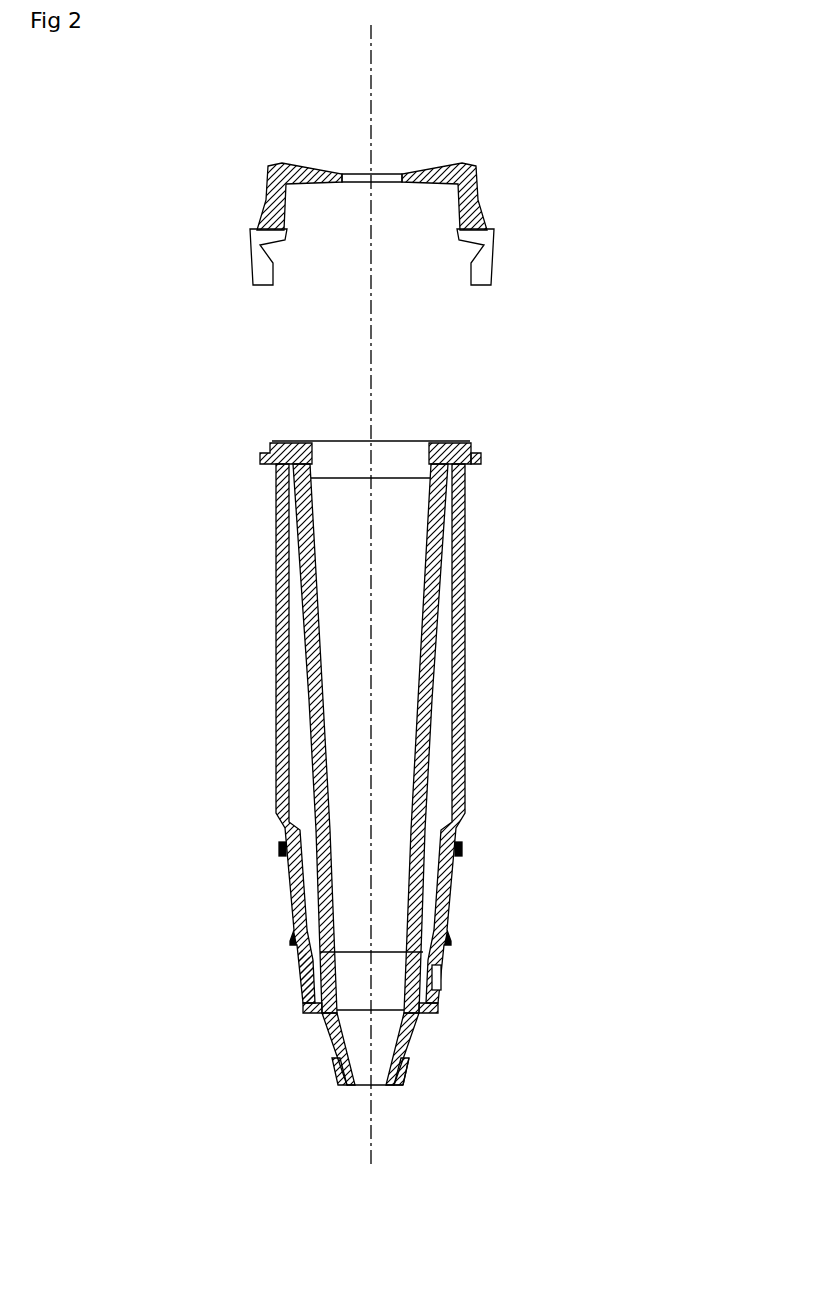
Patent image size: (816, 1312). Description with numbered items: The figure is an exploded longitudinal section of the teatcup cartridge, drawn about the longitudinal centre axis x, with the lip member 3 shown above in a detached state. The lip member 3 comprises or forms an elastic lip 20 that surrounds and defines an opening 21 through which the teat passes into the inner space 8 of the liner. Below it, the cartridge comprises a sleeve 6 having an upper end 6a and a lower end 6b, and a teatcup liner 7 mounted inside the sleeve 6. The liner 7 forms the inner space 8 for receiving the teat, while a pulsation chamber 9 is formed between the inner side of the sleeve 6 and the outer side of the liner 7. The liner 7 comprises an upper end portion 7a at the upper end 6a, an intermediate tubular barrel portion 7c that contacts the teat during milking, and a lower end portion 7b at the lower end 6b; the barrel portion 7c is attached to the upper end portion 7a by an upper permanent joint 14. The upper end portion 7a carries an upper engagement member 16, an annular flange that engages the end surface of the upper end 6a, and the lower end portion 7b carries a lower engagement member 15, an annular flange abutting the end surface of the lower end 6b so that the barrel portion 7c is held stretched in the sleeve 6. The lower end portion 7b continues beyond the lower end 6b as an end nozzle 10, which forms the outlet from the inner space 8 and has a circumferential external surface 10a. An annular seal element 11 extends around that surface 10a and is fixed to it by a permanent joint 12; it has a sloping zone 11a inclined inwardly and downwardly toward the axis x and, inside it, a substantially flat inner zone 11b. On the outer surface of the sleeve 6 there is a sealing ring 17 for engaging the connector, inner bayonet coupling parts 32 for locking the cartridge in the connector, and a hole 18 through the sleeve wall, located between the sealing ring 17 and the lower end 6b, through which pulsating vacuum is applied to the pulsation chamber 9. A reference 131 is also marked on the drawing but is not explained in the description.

The lip member 3 is at (438, 190).
The lip 20 is at (322, 172).
The opening 21 is at (378, 174).
The longitudinal centre axis x is at (368, 85).
The upper engagement member 16 is at (463, 441).
The upper permanent joint 14 is at (480, 453).
The upper end portion 7a is at (273, 450).
The upper end 6a is at (276, 487).
The sleeve 6 is at (465, 547).
The inner space 8 is at (383, 617).
The barrel portion 7c is at (312, 678).
The teatcup liner 7 is at (438, 697).
The pulsation chamber 9 is at (445, 797).
The sealing ring 17 is at (280, 852).
The inner bayonet coupling parts 32 is at (290, 937).
The stop line 131 is at (423, 952).
The hole 18 is at (438, 977).
The lower end 6b is at (302, 995).
The lower engagement member 15 is at (435, 1013).
The lower end portion 7b is at (330, 1035).
The circumferential external surface 10a is at (413, 1040).
The end nozzle 10 is at (333, 1050).
The annular seal element 11 is at (407, 1072).
The sloping zone 11a is at (496, 1097).
The inner zone 11b is at (492, 1125).
The permanent joint 12 is at (337, 1077).